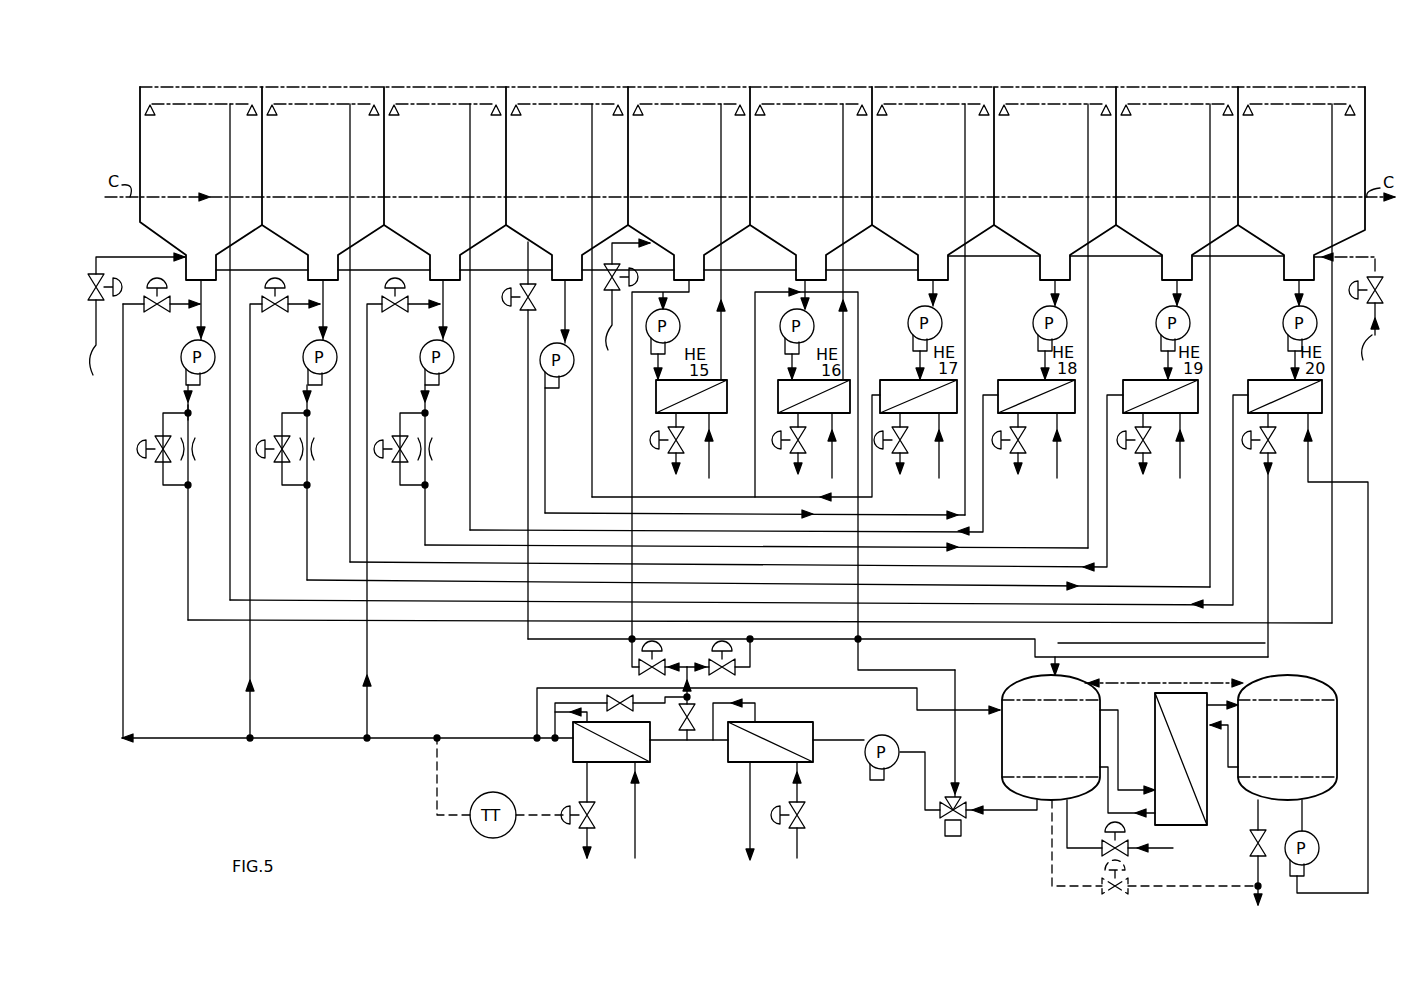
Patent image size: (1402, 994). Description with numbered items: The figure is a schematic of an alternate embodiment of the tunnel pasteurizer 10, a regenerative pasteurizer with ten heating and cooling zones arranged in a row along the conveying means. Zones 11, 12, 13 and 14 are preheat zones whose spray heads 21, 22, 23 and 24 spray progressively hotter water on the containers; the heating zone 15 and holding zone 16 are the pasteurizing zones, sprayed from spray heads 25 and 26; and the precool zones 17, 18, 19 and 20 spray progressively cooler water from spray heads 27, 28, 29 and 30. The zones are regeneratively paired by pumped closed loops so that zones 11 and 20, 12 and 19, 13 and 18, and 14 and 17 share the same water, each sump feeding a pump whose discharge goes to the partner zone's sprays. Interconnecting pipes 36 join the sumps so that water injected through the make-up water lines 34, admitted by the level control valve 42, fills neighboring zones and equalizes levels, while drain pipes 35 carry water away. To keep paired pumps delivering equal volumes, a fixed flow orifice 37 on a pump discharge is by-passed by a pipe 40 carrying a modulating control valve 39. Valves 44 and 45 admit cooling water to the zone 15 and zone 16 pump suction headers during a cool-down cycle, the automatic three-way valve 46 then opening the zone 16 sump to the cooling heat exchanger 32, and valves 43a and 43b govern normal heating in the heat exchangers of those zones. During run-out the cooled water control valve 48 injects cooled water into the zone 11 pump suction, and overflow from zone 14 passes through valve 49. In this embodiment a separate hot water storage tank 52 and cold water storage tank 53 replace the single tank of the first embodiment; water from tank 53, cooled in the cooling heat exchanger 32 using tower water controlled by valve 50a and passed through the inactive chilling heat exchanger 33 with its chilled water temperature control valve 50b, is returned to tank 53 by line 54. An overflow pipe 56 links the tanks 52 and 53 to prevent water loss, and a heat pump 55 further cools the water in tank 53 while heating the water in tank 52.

The tunnel pasteurizer 10 is at (780, 82).
The preheat zone 11 is at (201, 343).
The preheat zone 12 is at (323, 324).
The preheat zone 13 is at (445, 308).
The preheat zone 14 is at (567, 292).
The heating zone 15 is at (689, 233).
The holding zone 16 is at (811, 233).
The precool zone 17 is at (933, 301).
The precool zone 18 is at (1055, 317).
The precool zone 19 is at (1177, 337).
The precool zone 20 is at (1301, 355).
The spray head 21 is at (194, 104).
The spray head 22 is at (316, 104).
The spray head 23 is at (438, 104).
The spray head 24 is at (560, 104).
The spray head 25 is at (682, 104).
The spray head 26 is at (804, 104).
The spray head 27 is at (926, 104).
The spray head 28 is at (1048, 104).
The spray head 29 is at (1170, 104).
The spray head 30 is at (1292, 104).
The cooling heat exchanger 32 is at (738, 765).
The chilling heat exchanger 33 is at (655, 752).
The make-up water supply line 34 is at (1175, 868).
The drain pipe 35 is at (1268, 896).
The interconnecting pipe 36 is at (278, 274).
The fixed flow orifice 37 is at (195, 470).
The modulating control valve 39 is at (158, 440).
The by-pass pipe 40 is at (176, 405).
The level control valve 42 is at (96, 272).
The valve 43a is at (650, 442).
The valve 43b is at (773, 450).
The valve 44 is at (632, 653).
The valve 45 is at (745, 652).
The automatic three-way valve 46 is at (968, 818).
The cooled water control valve 48 is at (172, 318).
The valve 49 is at (511, 305).
The valve 50a is at (812, 814).
The chilled water temperature control valve 50b is at (578, 803).
The hot water storage tank 52 is at (1287, 737).
The cold water storage tank 53 is at (1051, 737).
The line 54 is at (815, 690).
The heat pump 55 is at (1187, 826).
The overflow pipe 56 is at (1245, 678).